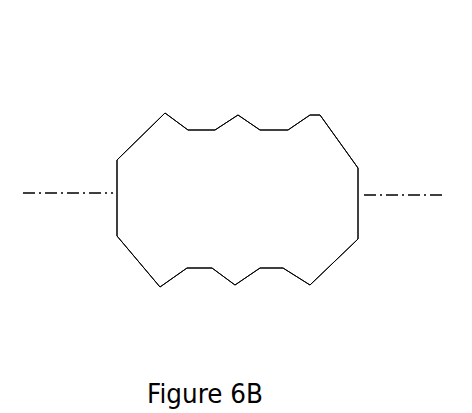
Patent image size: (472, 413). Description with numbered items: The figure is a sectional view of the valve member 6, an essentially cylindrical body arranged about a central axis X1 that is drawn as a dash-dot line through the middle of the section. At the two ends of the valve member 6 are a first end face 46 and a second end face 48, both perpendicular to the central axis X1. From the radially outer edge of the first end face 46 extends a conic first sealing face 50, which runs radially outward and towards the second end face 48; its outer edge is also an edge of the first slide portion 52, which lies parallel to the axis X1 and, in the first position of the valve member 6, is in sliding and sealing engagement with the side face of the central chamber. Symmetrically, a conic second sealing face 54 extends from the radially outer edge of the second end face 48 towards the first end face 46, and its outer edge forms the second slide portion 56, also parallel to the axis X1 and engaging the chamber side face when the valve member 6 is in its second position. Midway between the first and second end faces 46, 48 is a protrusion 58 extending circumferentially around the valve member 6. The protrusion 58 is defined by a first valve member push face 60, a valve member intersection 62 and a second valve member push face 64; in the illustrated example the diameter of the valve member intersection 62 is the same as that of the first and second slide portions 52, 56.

The valve member 6 is at (233, 221).
The first end face 46 is at (358, 213).
The second end face 48 is at (113, 177).
The first sealing face 50 is at (338, 258).
The first slide portion 52 is at (308, 289).
The second sealing face 54 is at (127, 251).
The second slide portion 56 is at (160, 286).
The protrusion 58 is at (240, 273).
The first valve member push face 60 is at (221, 124).
The valve member intersection 62 is at (238, 115).
The second valve member push face 64 is at (249, 122).
The central axis X1 is at (386, 195).